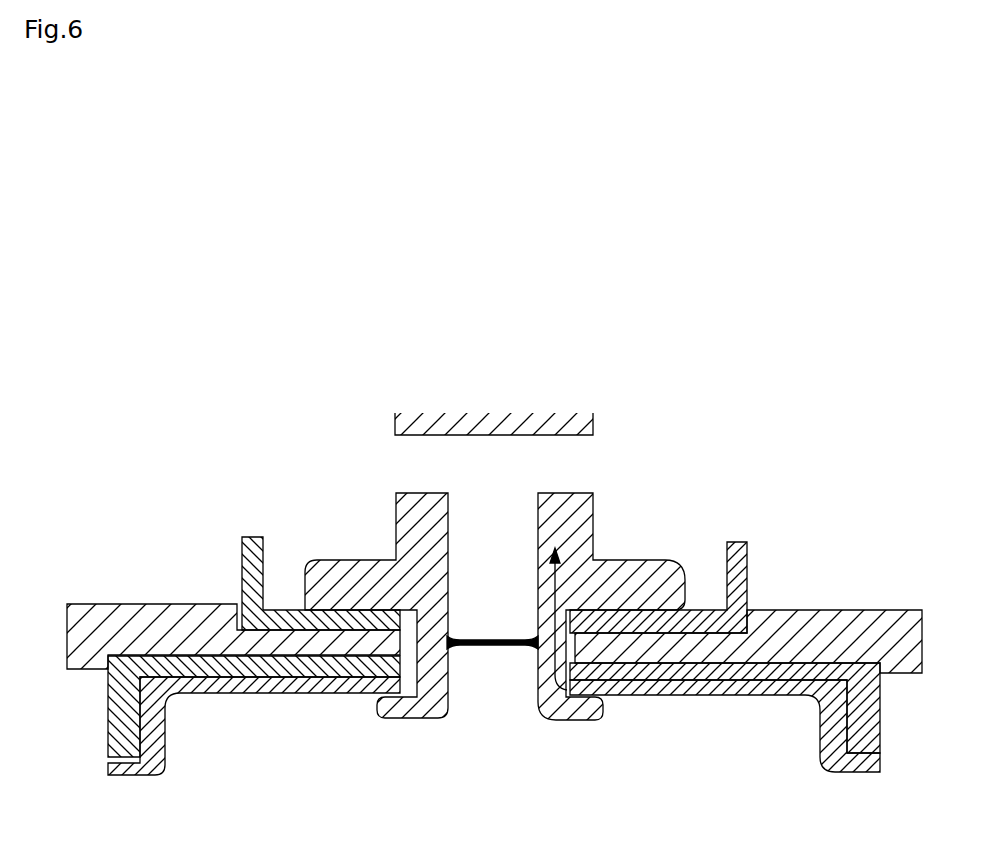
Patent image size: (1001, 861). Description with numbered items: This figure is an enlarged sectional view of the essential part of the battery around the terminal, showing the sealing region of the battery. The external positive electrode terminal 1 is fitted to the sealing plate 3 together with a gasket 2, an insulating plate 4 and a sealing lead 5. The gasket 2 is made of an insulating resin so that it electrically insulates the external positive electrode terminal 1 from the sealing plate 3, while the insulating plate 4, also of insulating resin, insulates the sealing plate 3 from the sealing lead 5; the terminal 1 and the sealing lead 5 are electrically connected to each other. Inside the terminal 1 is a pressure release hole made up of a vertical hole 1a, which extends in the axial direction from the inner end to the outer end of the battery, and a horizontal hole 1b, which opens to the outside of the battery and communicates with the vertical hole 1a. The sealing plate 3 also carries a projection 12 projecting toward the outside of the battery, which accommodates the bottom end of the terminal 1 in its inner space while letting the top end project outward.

The external positive electrode terminal 1 is at (400, 415).
The vertical hole 1a is at (500, 557).
The horizontal hole 1b is at (492, 470).
The gasket 2 is at (253, 537).
The sealing plate 3 is at (147, 623).
The insulating plate 4 is at (112, 710).
The sealing lead 5 is at (143, 752).
The sealing plate projection 12 is at (505, 645).